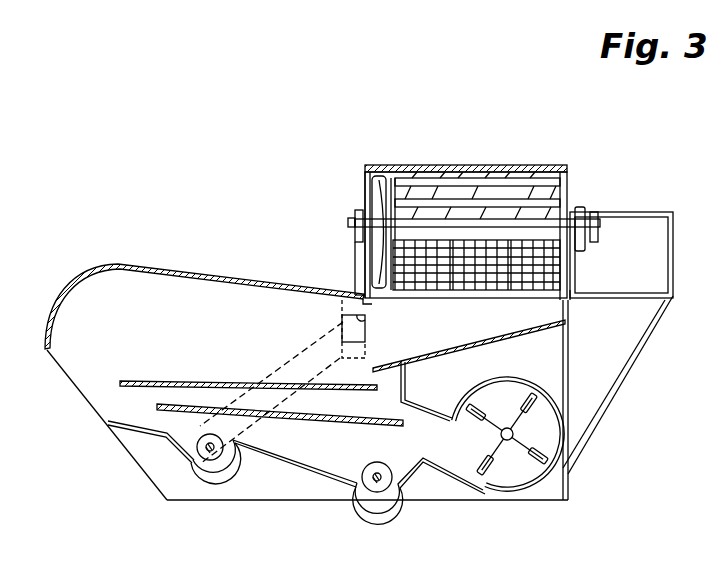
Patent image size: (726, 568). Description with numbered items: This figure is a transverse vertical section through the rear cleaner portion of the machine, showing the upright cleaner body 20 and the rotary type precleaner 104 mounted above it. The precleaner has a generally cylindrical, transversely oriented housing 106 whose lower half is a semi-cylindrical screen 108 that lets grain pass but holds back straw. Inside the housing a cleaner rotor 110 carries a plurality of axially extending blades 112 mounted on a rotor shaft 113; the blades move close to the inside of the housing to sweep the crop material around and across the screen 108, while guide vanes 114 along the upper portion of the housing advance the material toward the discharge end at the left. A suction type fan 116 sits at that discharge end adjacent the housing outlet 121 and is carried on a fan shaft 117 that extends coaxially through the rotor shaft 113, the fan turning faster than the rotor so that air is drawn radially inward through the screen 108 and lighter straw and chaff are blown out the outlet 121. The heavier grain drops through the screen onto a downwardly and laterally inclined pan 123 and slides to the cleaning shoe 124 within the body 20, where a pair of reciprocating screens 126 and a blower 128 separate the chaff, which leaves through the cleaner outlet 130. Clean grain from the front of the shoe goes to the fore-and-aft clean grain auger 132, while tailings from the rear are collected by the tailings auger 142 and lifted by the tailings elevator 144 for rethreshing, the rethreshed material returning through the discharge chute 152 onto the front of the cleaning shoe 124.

The cleaner body 20 is at (268, 268).
The rotary type precleaner 104 is at (482, 140).
The cylindrical housing 106 is at (378, 168).
The screen 108 is at (465, 291).
The cleaner rotor 110 is at (398, 186).
The blades 112 is at (530, 183).
The rotor shaft 113 is at (412, 200).
The guide vanes 114 is at (498, 168).
The suction type fan 116 is at (375, 197).
The fan shaft 117 is at (362, 223).
The housing outlet 121 is at (358, 165).
The pan 123 is at (428, 353).
The cleaning shoe 124 is at (208, 365).
The reciprocating screens 126 is at (335, 388).
The blower 128 is at (527, 460).
The cleaner outlet 130 is at (78, 392).
The clean grain auger 132 is at (377, 482).
The tailings auger 142 is at (212, 457).
The tailings elevator 144 is at (332, 330).
The discharge chute 152 is at (365, 320).